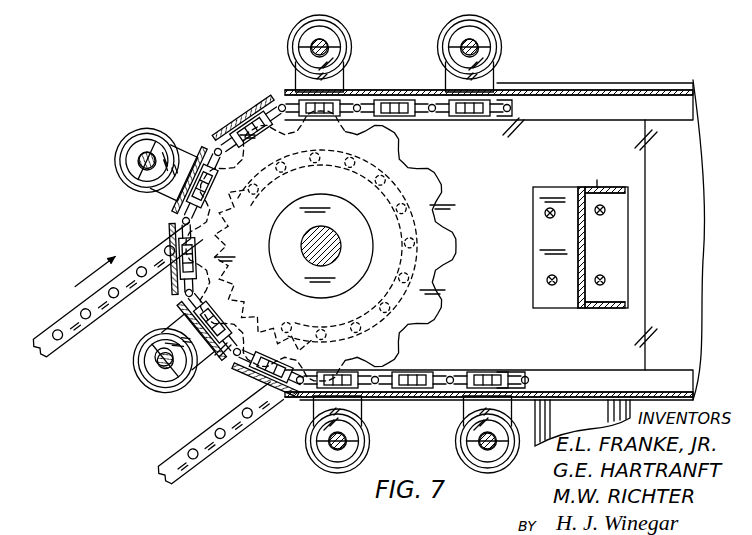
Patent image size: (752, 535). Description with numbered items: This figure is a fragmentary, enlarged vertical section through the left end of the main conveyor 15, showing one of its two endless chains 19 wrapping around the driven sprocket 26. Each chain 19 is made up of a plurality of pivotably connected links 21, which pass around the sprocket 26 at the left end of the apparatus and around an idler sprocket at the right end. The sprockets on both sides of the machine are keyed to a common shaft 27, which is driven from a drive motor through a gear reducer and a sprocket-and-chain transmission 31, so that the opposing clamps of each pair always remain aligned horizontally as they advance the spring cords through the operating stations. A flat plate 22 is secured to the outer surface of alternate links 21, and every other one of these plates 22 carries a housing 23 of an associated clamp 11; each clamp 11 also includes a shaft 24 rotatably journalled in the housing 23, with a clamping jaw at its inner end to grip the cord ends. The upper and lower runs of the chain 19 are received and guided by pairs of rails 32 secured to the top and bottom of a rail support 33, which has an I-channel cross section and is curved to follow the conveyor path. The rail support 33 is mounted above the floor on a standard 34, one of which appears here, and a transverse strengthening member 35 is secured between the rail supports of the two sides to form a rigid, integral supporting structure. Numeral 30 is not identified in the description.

The clamp 11 is at (347, 39).
The main conveyor 15 is at (189, 112).
The endless chain 19 is at (514, 105).
The link 21 is at (444, 116).
The flat plate 22 is at (200, 150).
The housing 23 is at (297, 80).
The shaft 24 is at (312, 50).
The driven sprocket 26 is at (438, 261).
The common shaft 27 is at (338, 241).
The drive unit 30 is at (66, 4).
The sprocket-and-chain transmission 31 is at (236, 442).
The rail 32 is at (592, 83).
The rail support 33 is at (694, 144).
The standard 34 is at (628, 418).
The transverse strengthening member 35 is at (597, 180).